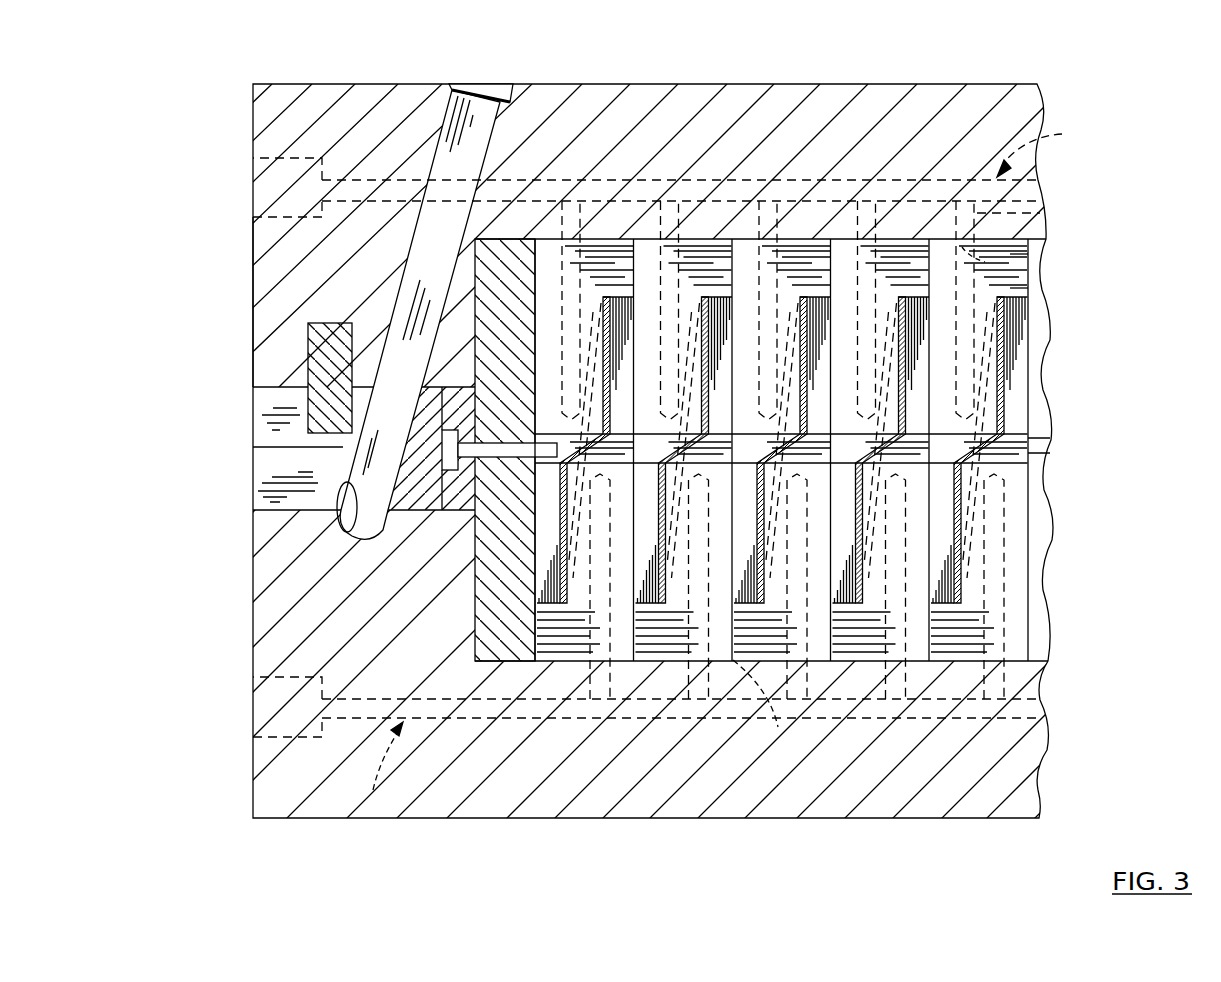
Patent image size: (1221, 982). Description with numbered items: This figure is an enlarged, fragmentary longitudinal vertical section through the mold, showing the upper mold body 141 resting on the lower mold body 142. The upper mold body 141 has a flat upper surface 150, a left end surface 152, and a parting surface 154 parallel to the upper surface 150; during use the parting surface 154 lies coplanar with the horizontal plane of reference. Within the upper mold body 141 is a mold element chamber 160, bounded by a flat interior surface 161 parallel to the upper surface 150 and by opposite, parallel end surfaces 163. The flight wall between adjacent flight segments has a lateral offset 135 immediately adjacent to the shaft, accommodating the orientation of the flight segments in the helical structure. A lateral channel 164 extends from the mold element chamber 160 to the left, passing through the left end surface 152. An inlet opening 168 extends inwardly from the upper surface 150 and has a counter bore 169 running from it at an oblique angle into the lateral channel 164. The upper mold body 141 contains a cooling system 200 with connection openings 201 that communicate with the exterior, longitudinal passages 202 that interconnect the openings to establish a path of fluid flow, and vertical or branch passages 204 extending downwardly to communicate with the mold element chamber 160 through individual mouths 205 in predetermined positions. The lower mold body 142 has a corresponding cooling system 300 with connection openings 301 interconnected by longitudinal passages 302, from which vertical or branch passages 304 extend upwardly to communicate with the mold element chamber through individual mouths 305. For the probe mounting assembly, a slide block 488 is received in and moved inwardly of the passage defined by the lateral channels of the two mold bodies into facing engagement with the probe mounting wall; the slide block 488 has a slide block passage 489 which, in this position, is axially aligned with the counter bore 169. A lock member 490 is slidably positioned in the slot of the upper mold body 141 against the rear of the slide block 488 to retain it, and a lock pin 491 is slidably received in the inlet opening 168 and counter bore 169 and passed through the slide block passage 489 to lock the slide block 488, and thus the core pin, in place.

The lateral offset 135 is at (673, 434).
The upper mold body 141 is at (250, 114).
The lower mold body 142 is at (252, 637).
The upper surface 150 is at (660, 84).
The left end surface 152 is at (252, 263).
The parting surface 154 is at (262, 470).
The mold element chamber 160 is at (1028, 288).
The interior surface 161 is at (1028, 254).
The end surfaces 163 is at (477, 278).
The lateral channel 164 is at (265, 405).
The inlet opening 168 is at (488, 90).
The counter bore 169 is at (452, 132).
The cooling system 200 is at (1049, 149).
The connection openings 201 is at (275, 216).
The longitudinal passages 202 is at (805, 181).
The vertical or branch passages 204 is at (597, 222).
The mouths 205 is at (985, 262).
The cooling system 300 is at (371, 768).
The connection openings 301 is at (282, 735).
The longitudinal passages 302 is at (526, 722).
The vertical or branch passages 304 is at (733, 660).
The mouths 305 is at (767, 707).
The slide block 488 is at (400, 512).
The slide block passage 489 is at (338, 538).
The lock member 490 is at (320, 348).
The lock pin 491 is at (453, 173).